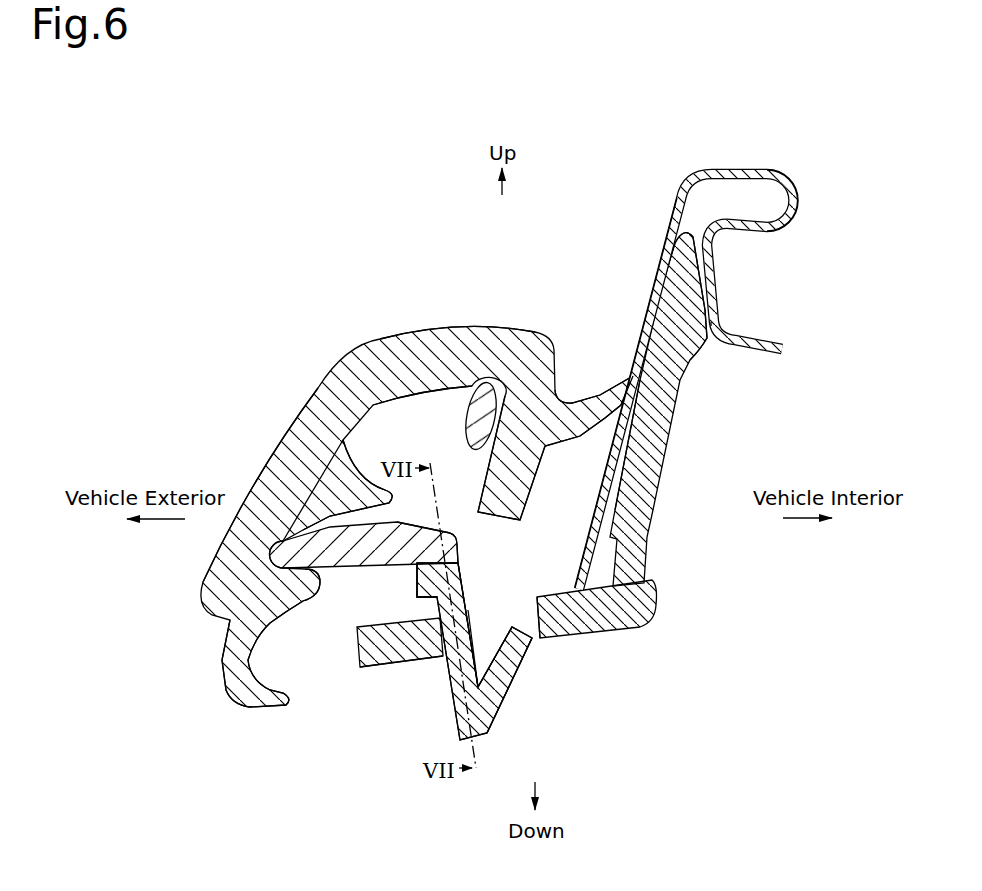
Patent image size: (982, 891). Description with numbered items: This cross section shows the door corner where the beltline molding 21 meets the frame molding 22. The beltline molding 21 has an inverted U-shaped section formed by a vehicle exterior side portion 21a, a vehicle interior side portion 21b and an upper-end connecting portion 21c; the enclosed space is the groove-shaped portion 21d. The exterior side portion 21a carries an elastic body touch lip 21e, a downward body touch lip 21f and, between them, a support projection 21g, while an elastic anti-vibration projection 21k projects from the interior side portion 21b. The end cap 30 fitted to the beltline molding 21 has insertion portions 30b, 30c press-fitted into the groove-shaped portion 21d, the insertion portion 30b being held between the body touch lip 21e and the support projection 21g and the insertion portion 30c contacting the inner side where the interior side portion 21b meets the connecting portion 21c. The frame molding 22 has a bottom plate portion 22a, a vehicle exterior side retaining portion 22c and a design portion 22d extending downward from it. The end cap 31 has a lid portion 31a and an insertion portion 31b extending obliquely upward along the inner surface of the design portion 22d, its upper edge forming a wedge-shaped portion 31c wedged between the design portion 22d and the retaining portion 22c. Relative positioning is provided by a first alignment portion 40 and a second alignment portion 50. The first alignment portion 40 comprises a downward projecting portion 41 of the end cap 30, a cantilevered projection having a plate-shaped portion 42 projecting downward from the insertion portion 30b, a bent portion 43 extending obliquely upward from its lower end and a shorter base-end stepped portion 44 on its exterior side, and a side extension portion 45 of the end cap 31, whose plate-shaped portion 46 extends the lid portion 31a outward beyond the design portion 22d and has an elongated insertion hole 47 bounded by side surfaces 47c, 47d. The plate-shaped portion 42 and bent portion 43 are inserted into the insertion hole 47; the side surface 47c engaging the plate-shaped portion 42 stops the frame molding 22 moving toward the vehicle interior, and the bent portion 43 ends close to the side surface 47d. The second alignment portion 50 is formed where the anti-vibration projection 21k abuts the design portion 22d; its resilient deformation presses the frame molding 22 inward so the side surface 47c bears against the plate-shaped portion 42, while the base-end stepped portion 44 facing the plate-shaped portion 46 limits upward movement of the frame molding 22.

The beltline molding 21 is at (336, 357).
The vehicle exterior side portion 21a is at (272, 475).
The vehicle interior side portion 21b is at (520, 470).
The upper-end connecting portion 21c is at (413, 355).
The groove-shaped portion 21d is at (420, 420).
The body touch lip 21e is at (305, 410).
The body touch lip 21f is at (240, 687).
The support projection 21g is at (308, 596).
The anti-vibration projection 21k is at (614, 382).
The frame molding 22 is at (672, 203).
The bottom plate portion 22a is at (763, 355).
The vehicle exterior side retaining portion 22c is at (788, 216).
The design portion 22d is at (655, 288).
The end cap 30 is at (343, 581).
The insertion portion 30b is at (452, 535).
The insertion portion 30c is at (483, 395).
The end cap 31 is at (667, 481).
The lid portion 31a is at (613, 617).
The insertion portion 31b is at (653, 428).
The wedge-shaped portion 31c is at (700, 345).
The first alignment portion 40 is at (415, 800).
The downward projecting portion 41 is at (448, 717).
The plate-shaped portion 42 is at (510, 670).
The bent portion 43 is at (463, 663).
The base-end stepped portion 44 is at (416, 575).
The side extension portion 45 is at (392, 667).
The plate-shaped portion 46 is at (365, 642).
The insertion hole 47 is at (508, 603).
The side surface 47c is at (452, 652).
The side surface 47d is at (532, 602).
The second alignment portion 50 is at (620, 357).